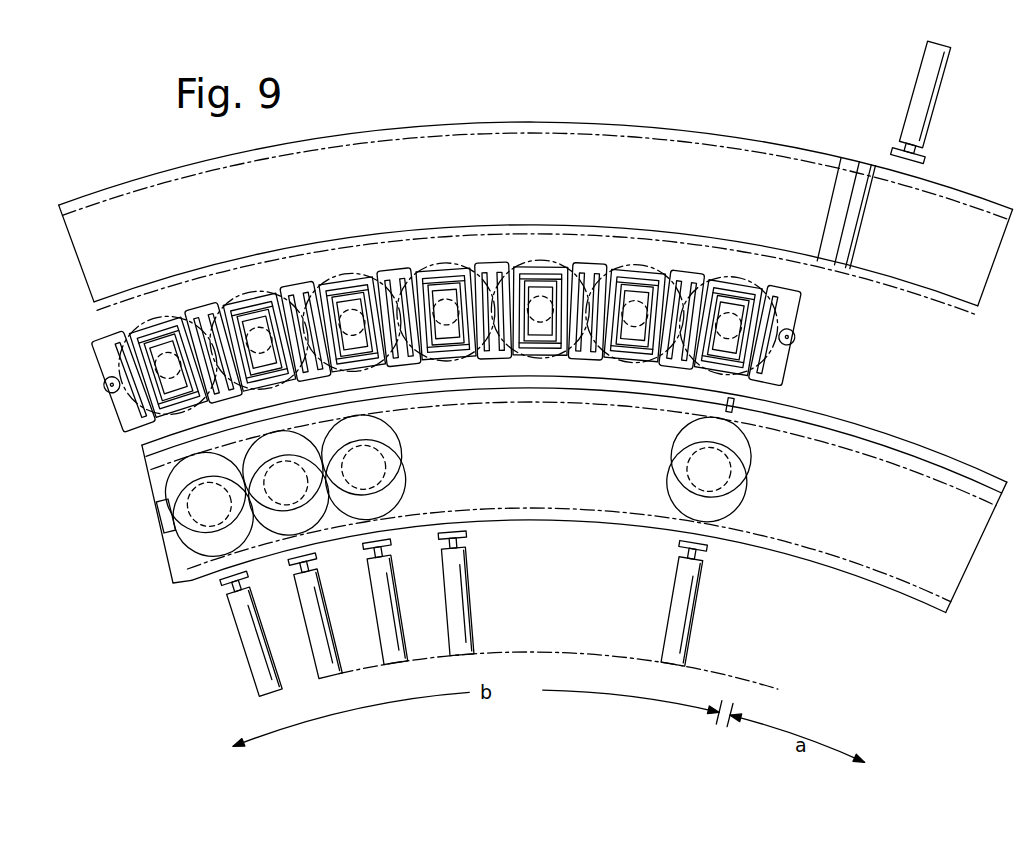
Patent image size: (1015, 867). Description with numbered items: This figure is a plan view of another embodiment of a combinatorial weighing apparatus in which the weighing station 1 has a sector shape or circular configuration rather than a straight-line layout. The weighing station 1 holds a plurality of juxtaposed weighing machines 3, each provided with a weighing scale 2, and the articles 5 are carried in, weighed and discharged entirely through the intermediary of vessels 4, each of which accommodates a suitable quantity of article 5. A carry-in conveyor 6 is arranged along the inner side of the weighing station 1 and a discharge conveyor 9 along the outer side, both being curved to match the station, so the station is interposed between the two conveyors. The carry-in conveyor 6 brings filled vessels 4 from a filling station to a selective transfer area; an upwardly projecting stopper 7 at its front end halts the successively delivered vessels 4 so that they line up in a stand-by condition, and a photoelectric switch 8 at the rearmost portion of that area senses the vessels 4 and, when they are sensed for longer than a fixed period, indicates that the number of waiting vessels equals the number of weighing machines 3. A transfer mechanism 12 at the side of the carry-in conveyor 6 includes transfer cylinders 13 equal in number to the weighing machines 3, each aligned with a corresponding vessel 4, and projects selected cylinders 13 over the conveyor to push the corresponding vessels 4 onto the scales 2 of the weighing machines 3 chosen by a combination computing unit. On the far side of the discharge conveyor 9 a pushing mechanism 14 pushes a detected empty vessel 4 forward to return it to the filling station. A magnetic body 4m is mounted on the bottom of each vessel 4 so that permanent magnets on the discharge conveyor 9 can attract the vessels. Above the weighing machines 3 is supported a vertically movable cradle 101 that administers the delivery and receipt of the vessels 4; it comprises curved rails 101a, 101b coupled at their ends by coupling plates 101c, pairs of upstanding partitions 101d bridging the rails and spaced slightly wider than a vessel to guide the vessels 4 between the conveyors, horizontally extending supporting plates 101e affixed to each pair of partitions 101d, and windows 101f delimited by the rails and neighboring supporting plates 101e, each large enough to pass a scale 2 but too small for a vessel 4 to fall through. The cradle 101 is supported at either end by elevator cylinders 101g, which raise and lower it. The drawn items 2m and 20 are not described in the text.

The weighing station 1 is at (104, 410).
The weighing scale 2 is at (142, 418).
The rotor magnet 2m is at (112, 329).
The weighing machine 3 is at (372, 285).
The vessel 4 is at (176, 484).
The magnetic body 4m is at (188, 520).
The article 5 is at (172, 500).
The carry-in conveyor 6 is at (173, 583).
The stopper 7 is at (158, 520).
The photoelectric switch 8 is at (742, 410).
The discharge conveyor 9 is at (655, 120).
The transfer mechanism 12 is at (223, 638).
The transfer cylinder 13 is at (270, 691).
The pushing mechanism 14 is at (945, 106).
The separator 20 is at (857, 162).
The cradle 101 is at (512, 248).
The rail 101a is at (158, 412).
The rail 101b is at (157, 330).
The coupling plate 101c is at (108, 345).
The partition 101d is at (117, 330).
The supporting plate 101e is at (228, 316).
The window 101f is at (136, 325).
The elevator cylinder 101g is at (108, 380).